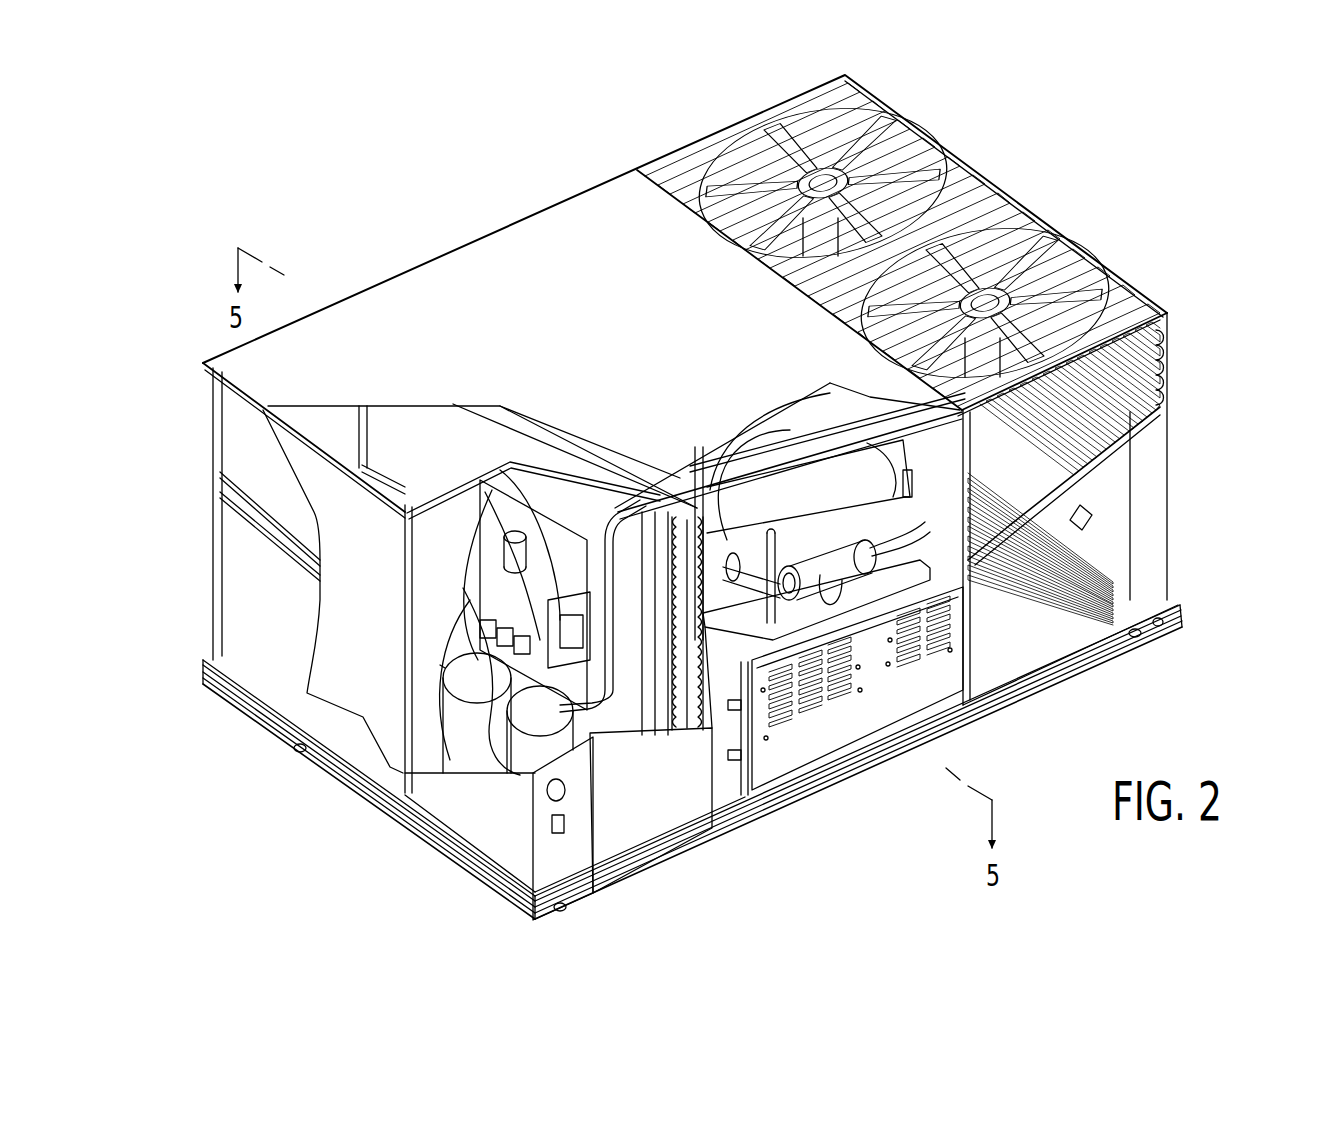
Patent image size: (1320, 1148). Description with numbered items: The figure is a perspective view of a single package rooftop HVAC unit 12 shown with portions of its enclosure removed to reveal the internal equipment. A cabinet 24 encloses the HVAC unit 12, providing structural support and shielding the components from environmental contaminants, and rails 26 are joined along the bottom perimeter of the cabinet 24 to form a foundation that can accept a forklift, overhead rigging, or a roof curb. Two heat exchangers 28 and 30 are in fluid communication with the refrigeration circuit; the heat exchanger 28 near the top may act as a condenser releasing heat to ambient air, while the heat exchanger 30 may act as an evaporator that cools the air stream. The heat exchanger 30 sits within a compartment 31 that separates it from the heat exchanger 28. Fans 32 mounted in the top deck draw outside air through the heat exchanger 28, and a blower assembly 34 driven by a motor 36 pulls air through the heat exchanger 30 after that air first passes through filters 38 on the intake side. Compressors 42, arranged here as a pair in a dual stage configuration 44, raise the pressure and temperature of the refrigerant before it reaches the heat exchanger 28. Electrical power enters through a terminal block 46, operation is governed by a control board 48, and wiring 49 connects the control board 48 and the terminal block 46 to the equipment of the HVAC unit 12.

The HVAC unit 12 is at (398, 178).
The cabinet 24 is at (248, 623).
The rails 26 is at (282, 726).
The heat exchanger 28 is at (1172, 372).
The heat exchanger 30 is at (686, 742).
The compartment 31 is at (707, 552).
The fans 32 is at (1020, 245).
The blower assembly 34 is at (893, 510).
The motor 36 is at (825, 560).
The filters 38 is at (650, 542).
The compressors 42 is at (445, 718).
The dual stage configuration 44 is at (440, 663).
The terminal block 46 is at (463, 588).
The control board 48 is at (573, 540).
The wiring 49 is at (656, 528).